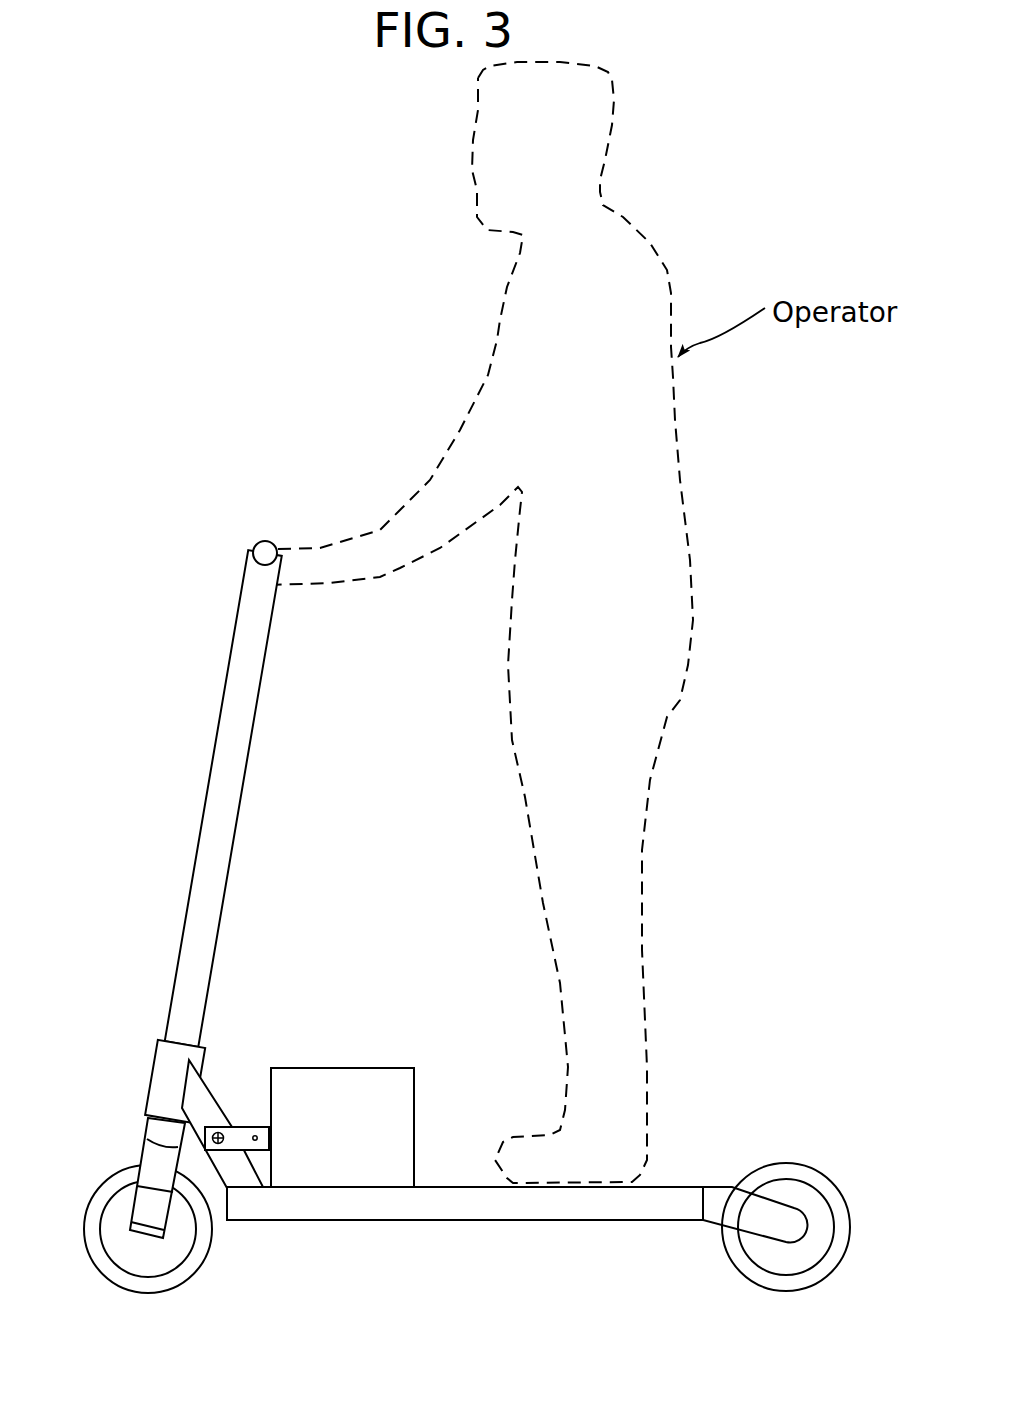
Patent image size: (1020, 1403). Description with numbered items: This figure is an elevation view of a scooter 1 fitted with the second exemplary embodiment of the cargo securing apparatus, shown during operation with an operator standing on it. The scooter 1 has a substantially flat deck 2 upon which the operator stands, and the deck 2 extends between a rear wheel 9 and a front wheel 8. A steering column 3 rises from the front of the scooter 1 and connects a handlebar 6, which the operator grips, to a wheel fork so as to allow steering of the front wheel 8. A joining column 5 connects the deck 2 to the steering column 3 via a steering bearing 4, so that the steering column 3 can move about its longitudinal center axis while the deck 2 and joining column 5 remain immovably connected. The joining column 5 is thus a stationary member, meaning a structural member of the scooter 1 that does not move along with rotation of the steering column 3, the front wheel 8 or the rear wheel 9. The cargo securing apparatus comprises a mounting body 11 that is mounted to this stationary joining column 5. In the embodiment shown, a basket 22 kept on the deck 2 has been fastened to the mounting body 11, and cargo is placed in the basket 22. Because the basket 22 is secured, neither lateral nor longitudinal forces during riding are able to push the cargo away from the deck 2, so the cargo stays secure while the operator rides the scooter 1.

The scooter 1 is at (187, 393).
The deck 2 is at (470, 1190).
The steering column 3 is at (220, 840).
The steering bearing 4 is at (166, 1063).
The joining column 5 is at (200, 1107).
The handlebar 6 is at (259, 549).
The front wheel 8 is at (106, 1194).
The rear wheel 9 is at (772, 1258).
The mounting body 11 is at (237, 1140).
The basket 22 is at (315, 1095).